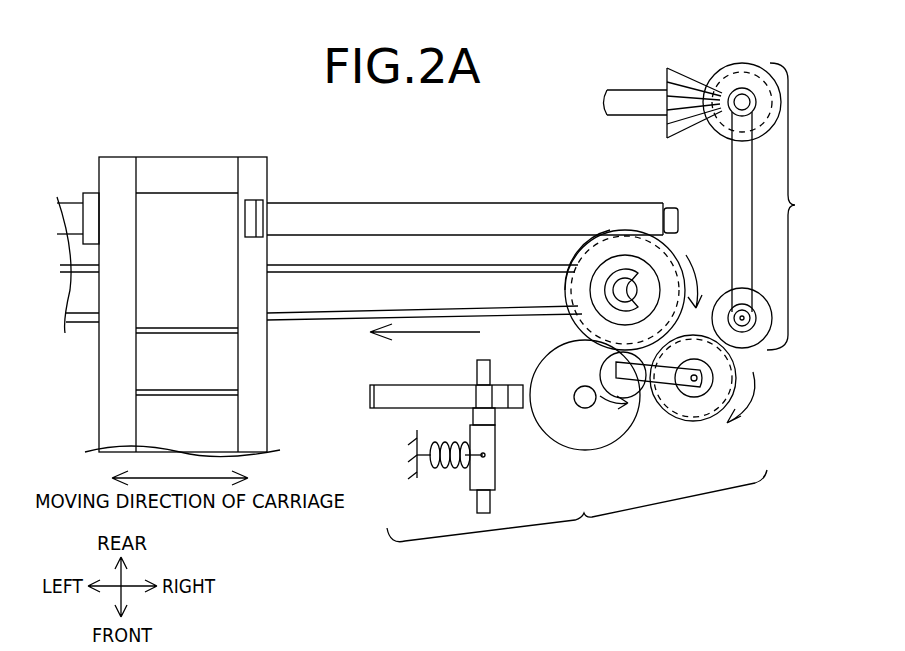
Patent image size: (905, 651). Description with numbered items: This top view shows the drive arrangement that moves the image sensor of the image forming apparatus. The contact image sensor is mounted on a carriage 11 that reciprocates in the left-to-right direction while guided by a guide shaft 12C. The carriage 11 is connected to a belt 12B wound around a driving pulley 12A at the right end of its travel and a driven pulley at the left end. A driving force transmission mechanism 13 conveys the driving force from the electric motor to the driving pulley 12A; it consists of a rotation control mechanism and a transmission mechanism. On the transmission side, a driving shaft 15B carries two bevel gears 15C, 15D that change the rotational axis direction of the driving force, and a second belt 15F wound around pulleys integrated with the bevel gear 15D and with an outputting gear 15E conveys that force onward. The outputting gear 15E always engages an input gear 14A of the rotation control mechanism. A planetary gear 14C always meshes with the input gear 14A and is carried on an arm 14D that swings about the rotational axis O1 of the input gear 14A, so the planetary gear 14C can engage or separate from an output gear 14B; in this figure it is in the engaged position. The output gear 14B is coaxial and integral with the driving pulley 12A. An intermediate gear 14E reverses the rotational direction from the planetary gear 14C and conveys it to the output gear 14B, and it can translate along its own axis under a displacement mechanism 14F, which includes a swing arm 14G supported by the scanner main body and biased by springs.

The carriage 11 is at (186, 156).
The driving pulley 12A is at (648, 278).
The belt 12B is at (522, 265).
The guide shaft 12C is at (372, 203).
The driving force transmission mechanism 13 is at (625, 308).
The input gear 14A is at (705, 403).
The output gear 14B is at (587, 248).
The planetary gear 14C is at (648, 385).
The arm 14D is at (688, 403).
The intermediate gear 14E is at (555, 438).
The displacement mechanism 14F is at (400, 432).
The swing arm 14G is at (426, 372).
The driving shaft 15B is at (640, 90).
The bevel gear 15C is at (683, 72).
The bevel gear 15D is at (757, 70).
The outputting gear 15E is at (722, 296).
The second belt 15F is at (732, 163).
The rotational axis O1 is at (745, 366).